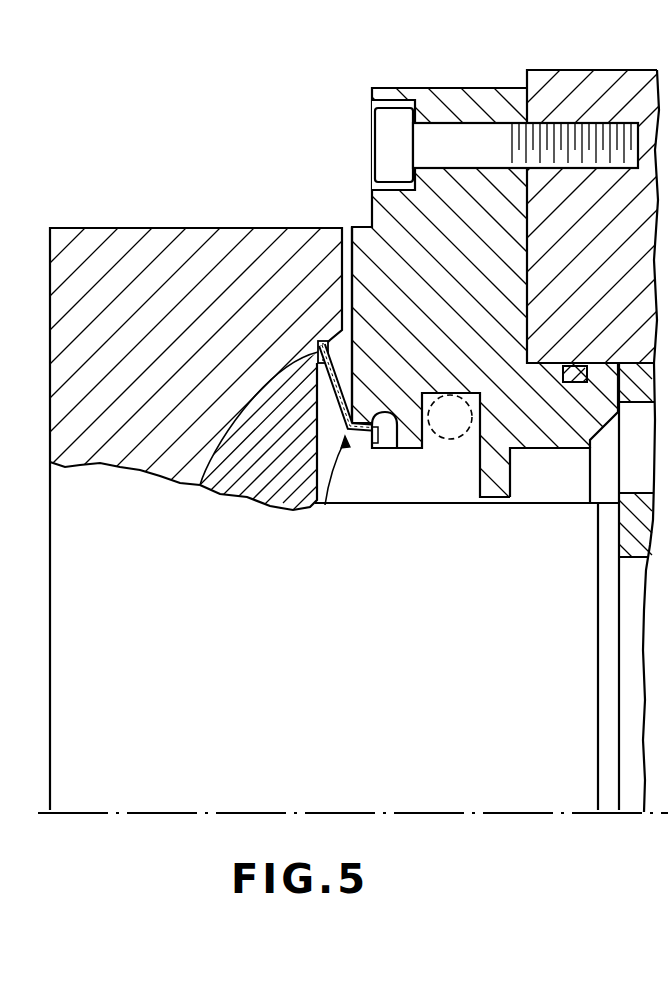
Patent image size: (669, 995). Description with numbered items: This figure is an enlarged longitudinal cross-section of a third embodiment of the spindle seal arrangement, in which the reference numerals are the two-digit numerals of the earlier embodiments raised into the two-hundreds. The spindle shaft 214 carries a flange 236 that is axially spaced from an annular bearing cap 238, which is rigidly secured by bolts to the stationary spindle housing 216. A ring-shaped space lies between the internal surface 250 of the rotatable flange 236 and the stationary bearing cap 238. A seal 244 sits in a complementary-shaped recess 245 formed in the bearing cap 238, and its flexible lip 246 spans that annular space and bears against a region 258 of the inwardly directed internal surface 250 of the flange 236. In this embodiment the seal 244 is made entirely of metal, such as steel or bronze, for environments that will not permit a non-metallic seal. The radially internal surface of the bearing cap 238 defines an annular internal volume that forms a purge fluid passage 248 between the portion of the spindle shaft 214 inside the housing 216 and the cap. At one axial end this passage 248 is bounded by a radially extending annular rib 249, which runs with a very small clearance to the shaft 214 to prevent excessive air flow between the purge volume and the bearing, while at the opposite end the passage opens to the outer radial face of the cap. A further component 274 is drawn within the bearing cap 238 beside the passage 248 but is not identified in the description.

The spindle shaft 214 is at (410, 738).
The spindle housing 216 is at (597, 88).
The flange 236 is at (155, 248).
The bearing cap 238 is at (444, 96).
The seal 244 is at (325, 507).
The recess 245 is at (378, 450).
The flexible lip 246 is at (250, 497).
The purge fluid passage 248 is at (402, 483).
The annular rib 249 is at (493, 498).
The internal surface 250 is at (347, 270).
The region 258 is at (162, 475).
The ball 274 is at (445, 440).